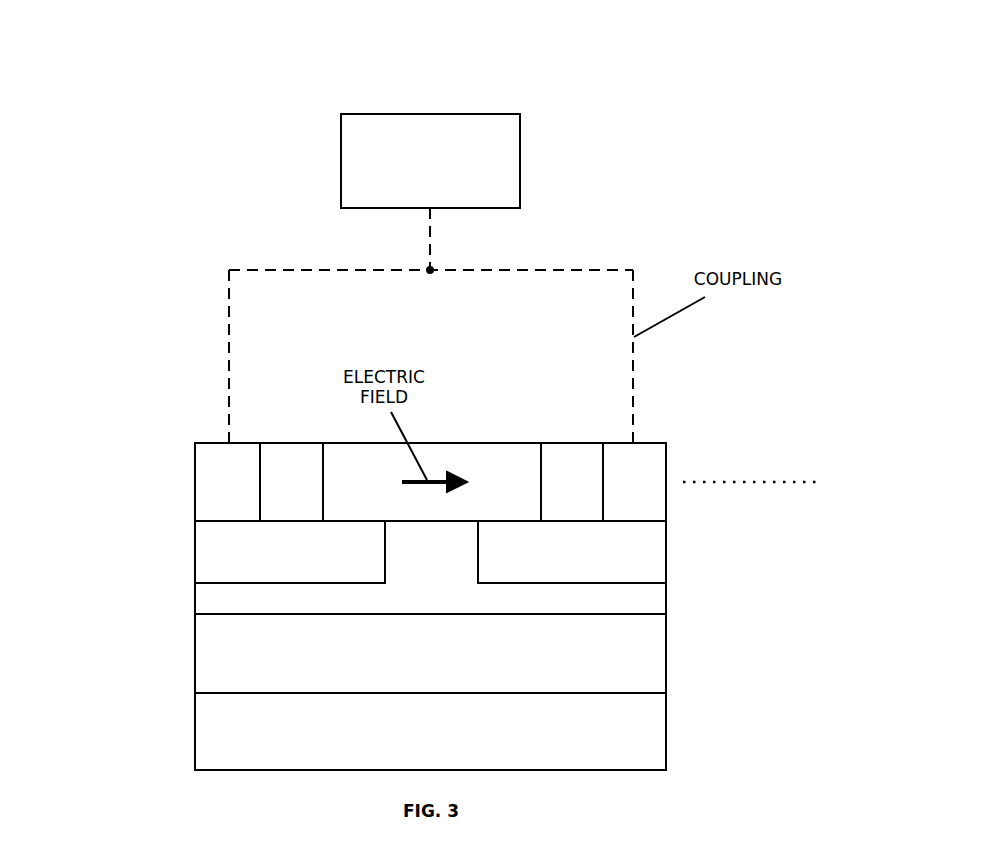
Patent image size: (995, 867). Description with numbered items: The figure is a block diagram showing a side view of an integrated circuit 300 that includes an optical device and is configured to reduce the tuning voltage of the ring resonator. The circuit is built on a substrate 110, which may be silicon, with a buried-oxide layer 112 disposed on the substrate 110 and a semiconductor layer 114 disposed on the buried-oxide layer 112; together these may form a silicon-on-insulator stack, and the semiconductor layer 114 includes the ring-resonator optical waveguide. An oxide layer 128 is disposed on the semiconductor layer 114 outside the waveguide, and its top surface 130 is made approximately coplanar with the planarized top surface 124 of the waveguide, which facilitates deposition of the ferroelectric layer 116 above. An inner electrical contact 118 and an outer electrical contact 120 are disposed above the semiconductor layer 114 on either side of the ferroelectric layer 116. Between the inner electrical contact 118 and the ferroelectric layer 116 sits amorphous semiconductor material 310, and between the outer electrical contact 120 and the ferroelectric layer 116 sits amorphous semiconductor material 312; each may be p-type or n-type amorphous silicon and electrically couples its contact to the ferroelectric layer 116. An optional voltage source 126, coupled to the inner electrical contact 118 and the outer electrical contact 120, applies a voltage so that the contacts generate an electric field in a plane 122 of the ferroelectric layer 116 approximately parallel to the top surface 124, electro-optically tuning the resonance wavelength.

The integrated circuit 300 is at (265, 55).
The substrate 110 is at (430, 731).
The buried-oxide layer 112 is at (430, 653).
The semiconductor layer 114 is at (582, 597).
The ferroelectric layer 116 is at (442, 459).
The inner electrical contact 118 is at (622, 477).
The outer electrical contact 120 is at (213, 479).
The plane 122 is at (743, 482).
The top surface 124 is at (407, 520).
The voltage source 126 is at (431, 278).
The oxide layer 128 is at (280, 555).
The top surface 130 is at (517, 520).
The amorphous semiconductor material 310 is at (570, 469).
The amorphous semiconductor material 312 is at (295, 473).